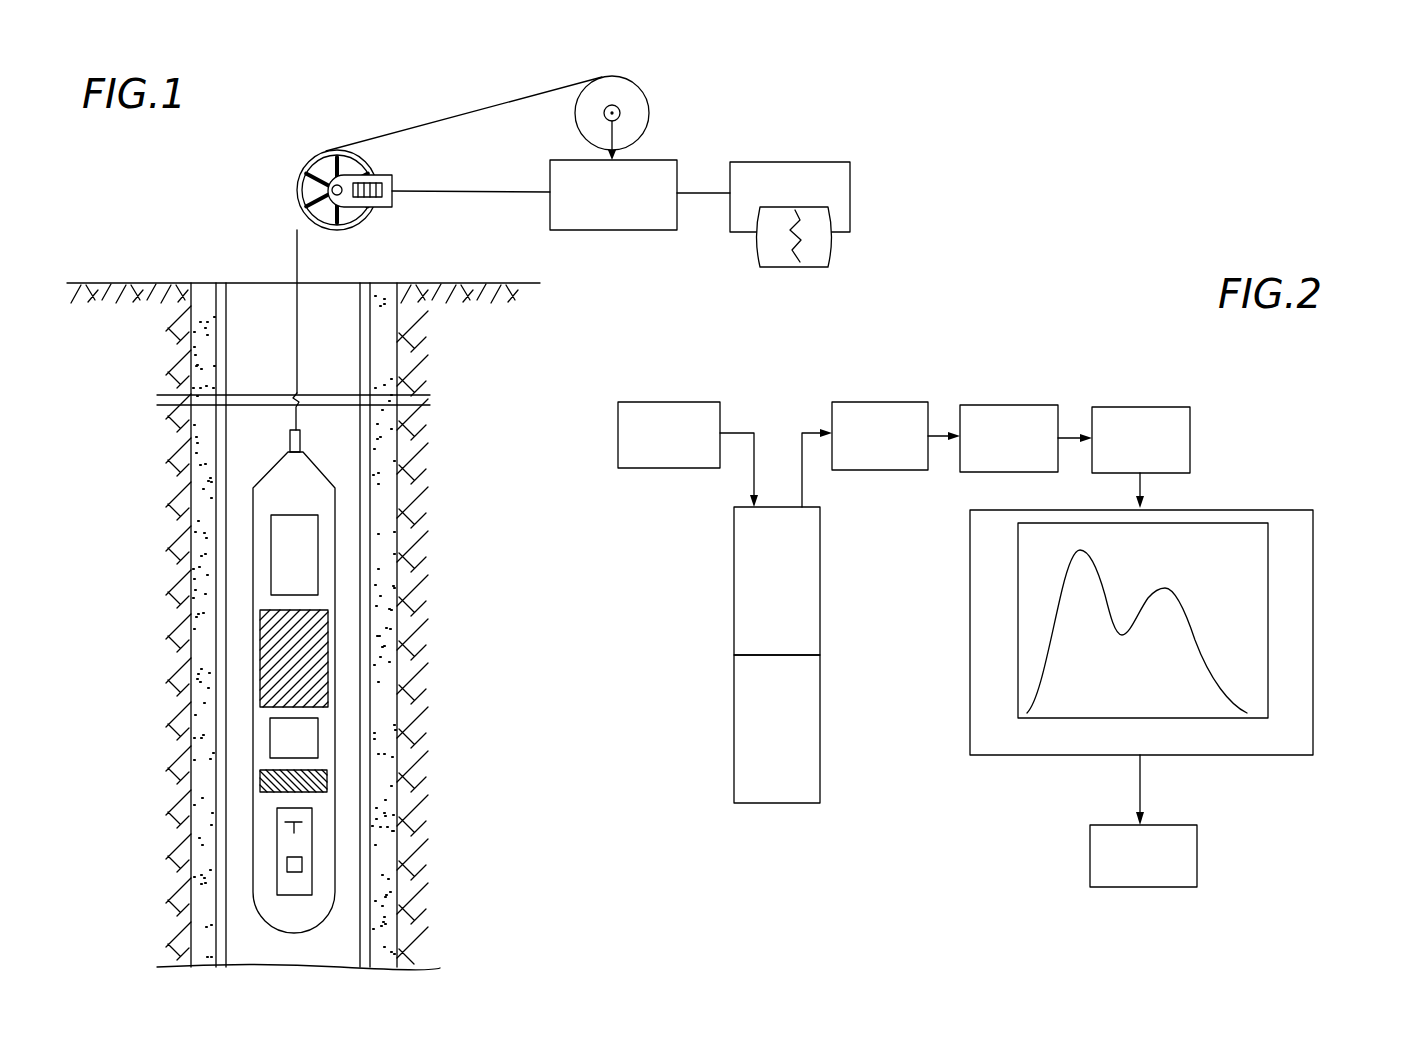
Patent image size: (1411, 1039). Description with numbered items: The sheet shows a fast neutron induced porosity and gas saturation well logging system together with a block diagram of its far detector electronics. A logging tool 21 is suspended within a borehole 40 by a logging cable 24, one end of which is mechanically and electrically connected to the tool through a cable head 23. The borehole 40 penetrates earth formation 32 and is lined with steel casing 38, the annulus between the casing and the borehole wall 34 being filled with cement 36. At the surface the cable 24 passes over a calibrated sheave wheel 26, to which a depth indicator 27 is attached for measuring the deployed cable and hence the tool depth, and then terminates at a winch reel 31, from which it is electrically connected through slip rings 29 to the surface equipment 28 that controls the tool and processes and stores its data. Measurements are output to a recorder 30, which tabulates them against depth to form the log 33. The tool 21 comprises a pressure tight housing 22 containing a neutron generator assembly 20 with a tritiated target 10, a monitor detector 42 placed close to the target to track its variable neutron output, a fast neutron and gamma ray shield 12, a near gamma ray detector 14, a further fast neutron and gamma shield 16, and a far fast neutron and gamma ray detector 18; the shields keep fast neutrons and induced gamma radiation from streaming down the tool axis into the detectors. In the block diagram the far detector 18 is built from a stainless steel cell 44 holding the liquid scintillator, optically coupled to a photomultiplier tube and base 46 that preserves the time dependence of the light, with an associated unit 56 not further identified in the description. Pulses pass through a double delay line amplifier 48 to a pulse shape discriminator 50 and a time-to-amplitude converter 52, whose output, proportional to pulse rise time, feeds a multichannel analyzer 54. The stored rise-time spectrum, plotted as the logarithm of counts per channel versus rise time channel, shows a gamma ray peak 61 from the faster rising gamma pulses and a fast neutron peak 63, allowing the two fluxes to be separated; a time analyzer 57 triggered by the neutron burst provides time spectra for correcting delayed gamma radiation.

In FIG. 1, the tritiated target 10 is at (294, 828).
In FIG. 1, the fast neutron and gamma ray shield 12 is at (260, 780).
In FIG. 1, the near gamma ray detector 14 is at (318, 742).
In FIG. 1, the fast neutron and gamma shield 16 is at (260, 665).
In FIG. 1, the far fast neutron and gamma ray detector 18 is at (271, 553).
In FIG. 2, the far fast neutron and gamma ray detector 18 is at (688, 670).
In FIG. 1, the neutron generator assembly 20 is at (313, 868).
In FIG. 1, the logging tool 21 is at (248, 473).
In FIG. 1, the pressure tight housing 22 is at (332, 912).
In FIG. 1, the cable head 23 is at (301, 440).
In FIG. 1, the logging cable 24 is at (452, 115).
In FIG. 1, the calibrated sheave wheel 26 is at (307, 157).
In FIG. 1, the depth indicator 27 is at (397, 170).
In FIG. 1, the surface equipment 28 is at (635, 230).
In FIG. 1, the electrical slip rings 29 is at (620, 113).
In FIG. 1, the recorder 30 is at (850, 176).
In FIG. 1, the winch reel 31 is at (647, 88).
In FIG. 1, the earth formation 32 is at (461, 618).
In FIG. 1, the log 33 is at (828, 253).
In FIG. 1, the borehole wall 34 is at (397, 327).
In FIG. 1, the cement 36 is at (393, 433).
In FIG. 1, the casing 38 is at (367, 512).
In FIG. 1, the borehole 40 is at (342, 292).
In FIG. 1, the monitor detector 42 is at (287, 873).
In FIG. 2, the stainless steel cell 44 is at (734, 725).
In FIG. 2, the photomultiplier tube and base 46 is at (734, 600).
In FIG. 2, the double delay line amplifier 48 is at (888, 402).
In FIG. 2, the pulse shape discriminator 50 is at (1013, 405).
In FIG. 2, the time-to-amplitude converter 52 is at (1145, 407).
In FIG. 2, the multichannel analyzer 54 is at (1313, 543).
In FIG. 2, the housekeeping electronics 56 is at (672, 402).
In FIG. 2, the time analyzer 57 is at (1197, 857).
In FIG. 2, the gamma ray peak 61 is at (1078, 565).
In FIG. 2, the fast neutron peak 63 is at (1172, 600).